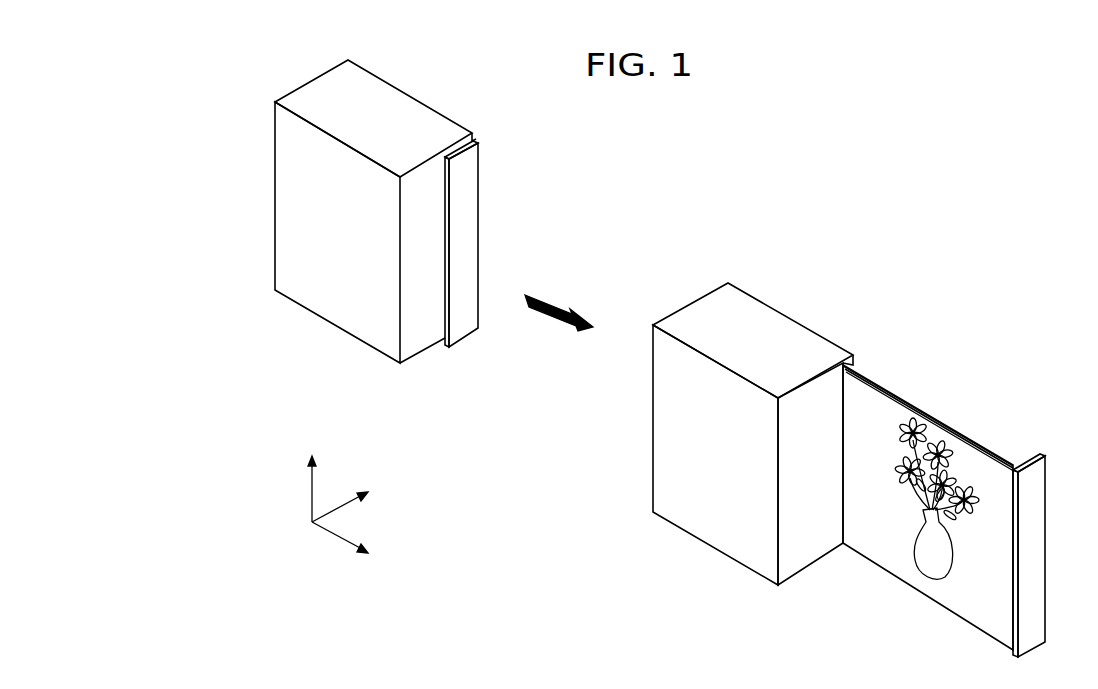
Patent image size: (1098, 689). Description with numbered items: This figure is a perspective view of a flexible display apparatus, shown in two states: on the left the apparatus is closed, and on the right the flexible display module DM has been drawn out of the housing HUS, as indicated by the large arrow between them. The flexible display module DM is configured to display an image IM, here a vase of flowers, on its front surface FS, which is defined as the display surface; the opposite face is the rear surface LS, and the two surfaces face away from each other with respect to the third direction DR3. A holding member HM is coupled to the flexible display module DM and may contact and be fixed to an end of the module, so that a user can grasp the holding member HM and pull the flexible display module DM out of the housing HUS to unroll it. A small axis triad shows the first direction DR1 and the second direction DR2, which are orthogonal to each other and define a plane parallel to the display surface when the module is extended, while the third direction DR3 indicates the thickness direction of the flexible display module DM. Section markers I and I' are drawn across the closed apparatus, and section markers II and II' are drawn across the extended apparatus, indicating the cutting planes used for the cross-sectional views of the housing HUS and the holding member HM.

The housing HUS is at (382, 88).
The holding member HM is at (460, 327).
The flexible display module DM is at (888, 312).
The rear surface LS is at (902, 391).
The front surface FS is at (902, 396).
The image IM is at (917, 562).
The section line I is at (256, 161).
The section line I' is at (475, 295).
The section line II is at (633, 382).
The section line II' is at (1057, 600).
The first direction DR1 is at (355, 547).
The second direction DR2 is at (311, 481).
The third direction DR3 is at (355, 498).